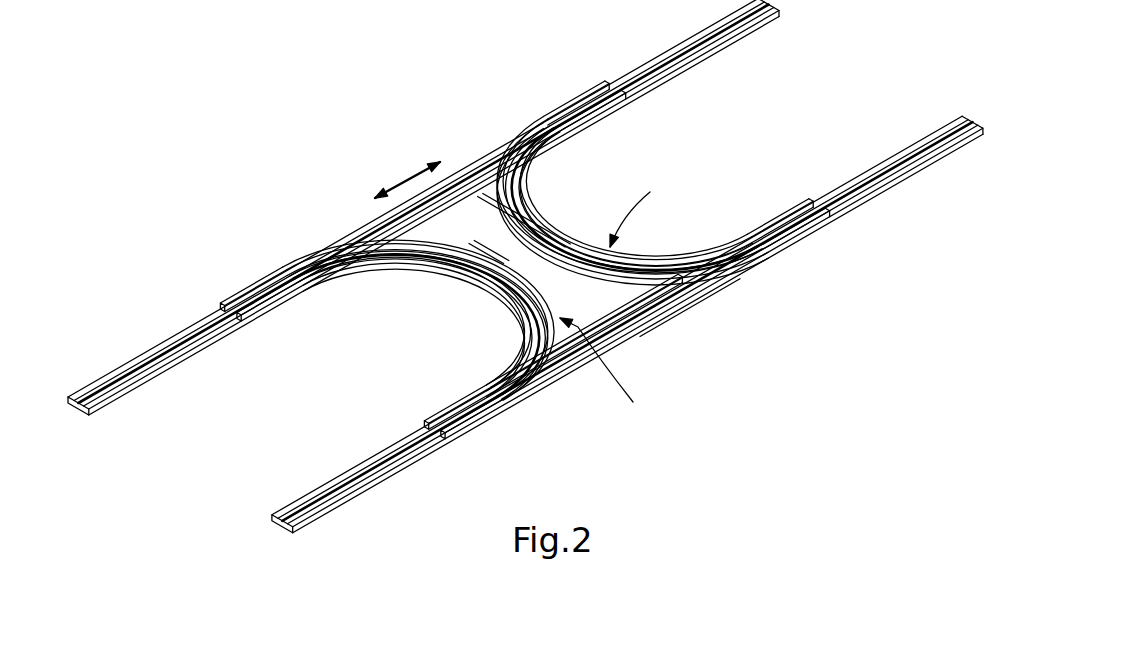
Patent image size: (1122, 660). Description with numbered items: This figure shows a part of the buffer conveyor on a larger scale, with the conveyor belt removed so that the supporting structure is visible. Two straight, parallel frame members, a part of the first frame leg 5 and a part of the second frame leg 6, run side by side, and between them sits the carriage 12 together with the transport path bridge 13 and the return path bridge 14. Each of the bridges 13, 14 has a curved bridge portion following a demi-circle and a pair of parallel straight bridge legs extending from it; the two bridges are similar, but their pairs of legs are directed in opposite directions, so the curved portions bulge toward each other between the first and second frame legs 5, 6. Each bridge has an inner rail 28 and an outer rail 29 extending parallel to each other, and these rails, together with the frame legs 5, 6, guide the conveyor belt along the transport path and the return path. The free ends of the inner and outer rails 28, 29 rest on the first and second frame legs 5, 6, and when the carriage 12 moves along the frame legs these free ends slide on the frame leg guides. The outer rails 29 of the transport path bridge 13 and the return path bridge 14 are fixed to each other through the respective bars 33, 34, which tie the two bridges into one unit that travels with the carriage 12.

The first frame leg 5 is at (105, 399).
The second frame leg 6 is at (322, 508).
The carriage 12 is at (495, 233).
The transport path bridge 13 is at (614, 373).
The return path bridge 14 is at (644, 207).
The inner rail 28 is at (278, 292).
The outer rail 29 is at (320, 248).
The bar 33 is at (692, 300).
The bar 34 is at (630, 277).